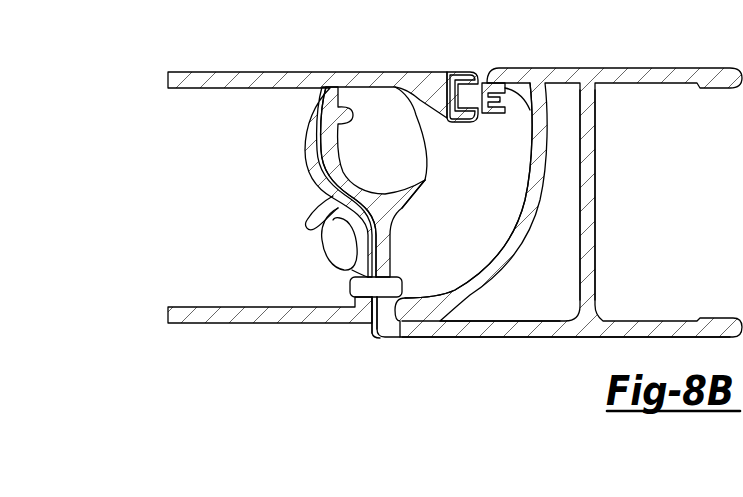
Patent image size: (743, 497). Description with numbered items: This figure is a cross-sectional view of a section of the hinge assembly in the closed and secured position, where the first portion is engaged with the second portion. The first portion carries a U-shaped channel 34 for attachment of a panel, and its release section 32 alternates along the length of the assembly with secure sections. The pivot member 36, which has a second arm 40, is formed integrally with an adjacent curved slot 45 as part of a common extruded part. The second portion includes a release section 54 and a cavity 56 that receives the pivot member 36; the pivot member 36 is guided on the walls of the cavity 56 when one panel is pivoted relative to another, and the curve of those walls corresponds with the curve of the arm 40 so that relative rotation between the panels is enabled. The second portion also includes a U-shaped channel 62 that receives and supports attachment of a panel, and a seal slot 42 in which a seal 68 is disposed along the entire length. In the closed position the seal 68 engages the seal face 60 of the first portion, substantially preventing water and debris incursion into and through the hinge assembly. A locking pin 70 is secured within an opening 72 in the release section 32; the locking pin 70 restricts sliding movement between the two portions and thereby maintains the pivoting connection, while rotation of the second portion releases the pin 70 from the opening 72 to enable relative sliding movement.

The release section 54 is at (337, 79).
The second arm 40 is at (328, 142).
The cavity 56 is at (411, 145).
The pivot member 36 is at (401, 209).
The seal slot 42 is at (443, 72).
The seal 68 is at (483, 83).
The U-shaped channel 34 is at (680, 209).
The seal face 60 is at (510, 114).
The curved slot 45 is at (474, 192).
The release section 32 is at (467, 338).
The U-shaped channel 62 is at (215, 208).
The locking pin 70 is at (352, 286).
The opening 72 is at (387, 298).